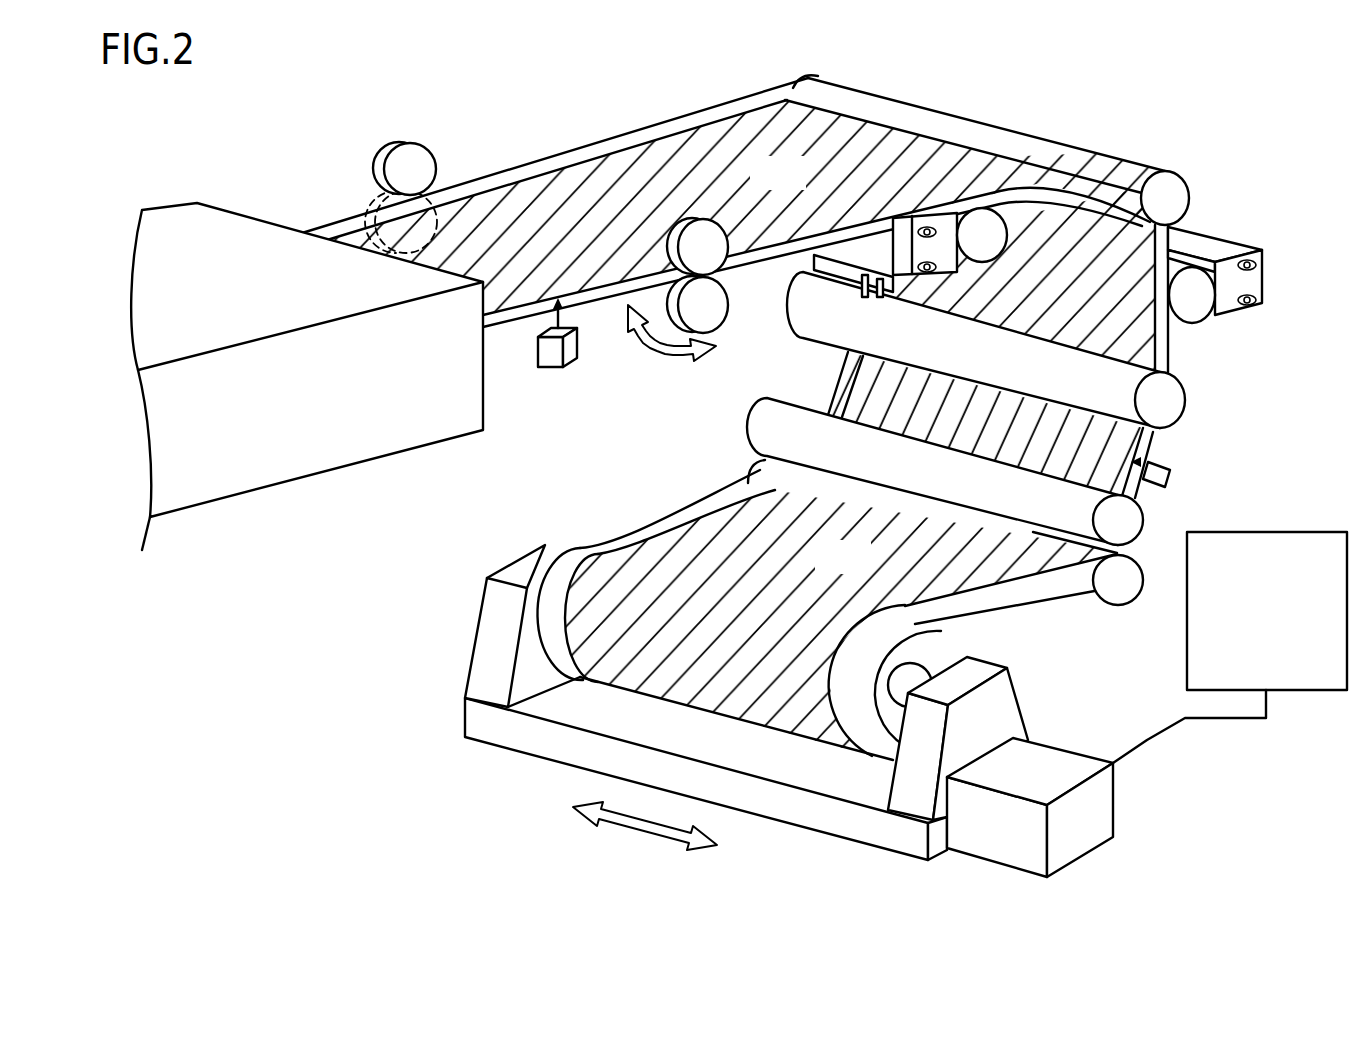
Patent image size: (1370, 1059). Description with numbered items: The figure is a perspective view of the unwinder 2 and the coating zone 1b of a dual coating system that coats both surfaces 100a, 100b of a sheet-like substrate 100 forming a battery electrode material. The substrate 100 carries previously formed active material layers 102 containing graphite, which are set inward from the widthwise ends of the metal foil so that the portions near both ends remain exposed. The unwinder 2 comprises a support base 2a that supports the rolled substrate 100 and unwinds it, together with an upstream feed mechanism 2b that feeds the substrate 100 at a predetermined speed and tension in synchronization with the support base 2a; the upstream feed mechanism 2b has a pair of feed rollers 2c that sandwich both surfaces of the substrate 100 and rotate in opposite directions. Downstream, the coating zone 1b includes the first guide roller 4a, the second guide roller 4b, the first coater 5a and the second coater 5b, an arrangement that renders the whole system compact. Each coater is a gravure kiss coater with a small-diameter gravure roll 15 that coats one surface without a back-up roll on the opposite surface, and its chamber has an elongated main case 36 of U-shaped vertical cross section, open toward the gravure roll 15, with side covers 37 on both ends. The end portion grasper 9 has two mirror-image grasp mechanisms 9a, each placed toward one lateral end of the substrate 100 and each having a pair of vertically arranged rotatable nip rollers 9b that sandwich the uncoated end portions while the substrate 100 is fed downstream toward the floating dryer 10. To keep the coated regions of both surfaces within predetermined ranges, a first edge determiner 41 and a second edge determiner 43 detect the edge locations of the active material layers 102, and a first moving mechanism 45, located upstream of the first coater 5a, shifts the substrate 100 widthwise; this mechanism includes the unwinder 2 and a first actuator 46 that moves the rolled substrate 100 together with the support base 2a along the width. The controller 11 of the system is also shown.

The coating zone 1b is at (815, 274).
The unwinder 2 is at (826, 637).
The support base 2a is at (490, 635).
The upstream feed mechanism 2b is at (1045, 595).
The feed rollers 2c is at (753, 428).
The first guide roller 4a is at (1180, 400).
The second guide roller 4b is at (1178, 193).
The first coater 5a is at (1242, 243).
The second coater 5b is at (1005, 224).
The end portion grasper 9 is at (549, 239).
The grasp mechanisms 9a is at (719, 336).
The nip rollers 9b is at (708, 254).
The floating dryer 10 is at (176, 225).
The controller 11 is at (1302, 532).
The small-diameter gravure roll 15 is at (993, 235).
The main case 36 is at (833, 252).
The side covers 37 is at (942, 250).
The first edge determiner 41 is at (1173, 475).
The second edge determiner 43 is at (572, 350).
The first moving mechanism 45 is at (1043, 717).
The first actuator 46 is at (1098, 805).
The substrate 100 is at (683, 503).
The surface of the substrate 100a is at (668, 150).
The surface of the substrate 100b is at (1117, 307).
The active material layers 102 is at (802, 186).